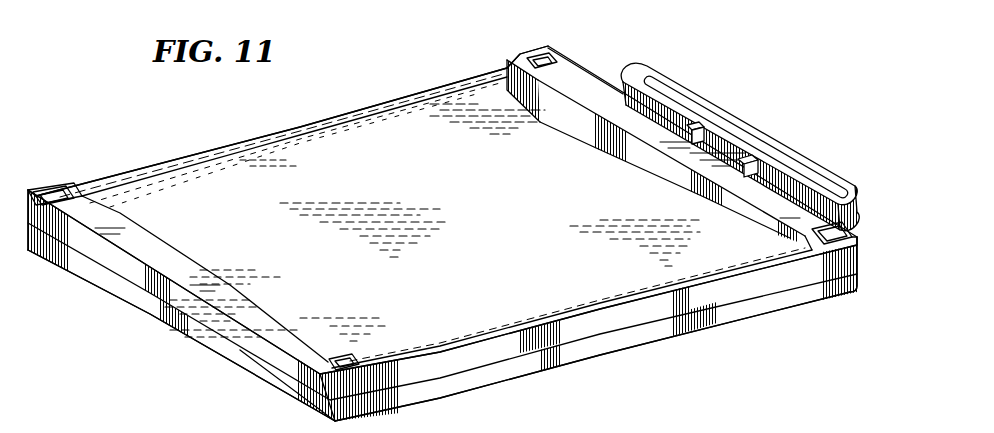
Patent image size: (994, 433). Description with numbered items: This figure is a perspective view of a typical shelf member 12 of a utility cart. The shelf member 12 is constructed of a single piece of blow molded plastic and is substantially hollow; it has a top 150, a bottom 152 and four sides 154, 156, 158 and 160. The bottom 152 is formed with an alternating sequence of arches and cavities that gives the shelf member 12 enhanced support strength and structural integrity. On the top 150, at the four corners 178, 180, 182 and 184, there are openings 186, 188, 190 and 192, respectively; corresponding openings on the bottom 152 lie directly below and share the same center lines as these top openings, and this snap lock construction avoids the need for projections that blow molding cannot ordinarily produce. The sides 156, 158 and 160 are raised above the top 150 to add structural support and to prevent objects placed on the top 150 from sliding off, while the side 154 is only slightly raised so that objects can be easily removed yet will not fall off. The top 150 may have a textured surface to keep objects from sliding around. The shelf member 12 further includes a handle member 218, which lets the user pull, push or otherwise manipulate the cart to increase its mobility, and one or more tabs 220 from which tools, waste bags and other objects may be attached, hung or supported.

The shelf member 12 is at (376, 76).
The top 150 is at (303, 157).
The bottom 152 is at (672, 332).
The side 154 is at (757, 300).
The side 156 is at (197, 333).
The side 158 is at (178, 160).
The side 160 is at (590, 74).
The corner 178 is at (302, 387).
The corner 180 is at (30, 188).
The corner 182 is at (547, 48).
The corner 184 is at (860, 242).
The opening 186 is at (337, 358).
The opening 188 is at (56, 194).
The opening 190 is at (550, 61).
The opening 192 is at (832, 192).
The handle member 218 is at (741, 146).
The tabs 220 is at (745, 157).